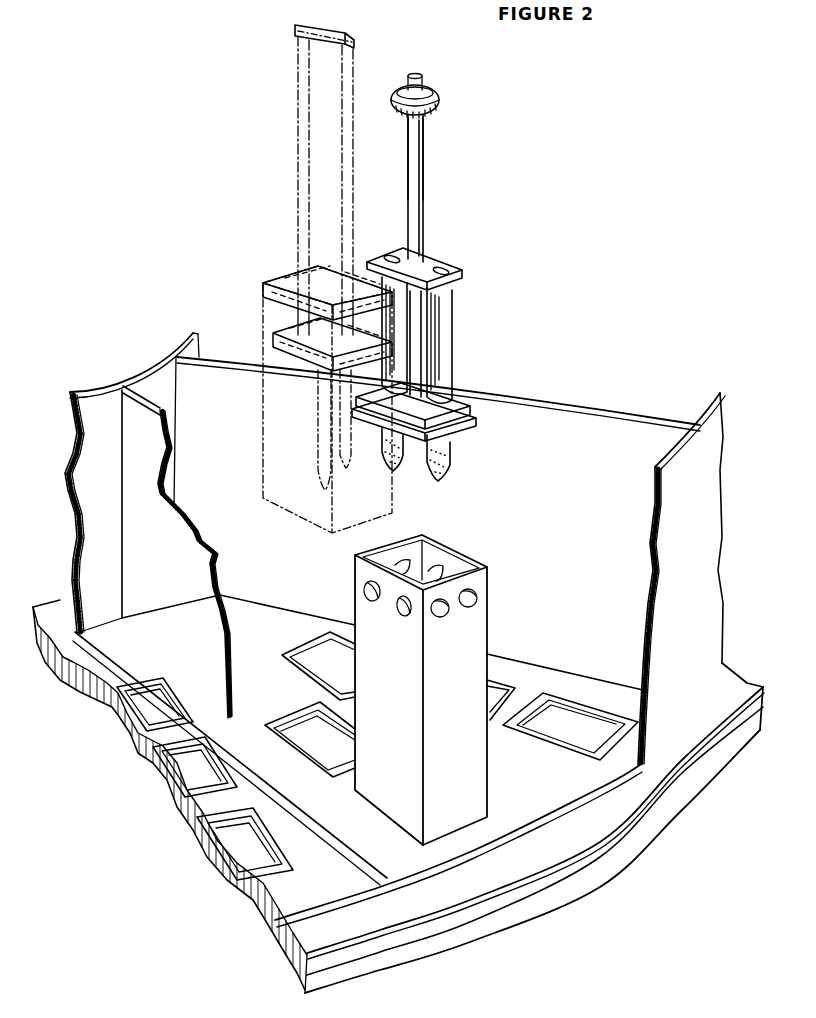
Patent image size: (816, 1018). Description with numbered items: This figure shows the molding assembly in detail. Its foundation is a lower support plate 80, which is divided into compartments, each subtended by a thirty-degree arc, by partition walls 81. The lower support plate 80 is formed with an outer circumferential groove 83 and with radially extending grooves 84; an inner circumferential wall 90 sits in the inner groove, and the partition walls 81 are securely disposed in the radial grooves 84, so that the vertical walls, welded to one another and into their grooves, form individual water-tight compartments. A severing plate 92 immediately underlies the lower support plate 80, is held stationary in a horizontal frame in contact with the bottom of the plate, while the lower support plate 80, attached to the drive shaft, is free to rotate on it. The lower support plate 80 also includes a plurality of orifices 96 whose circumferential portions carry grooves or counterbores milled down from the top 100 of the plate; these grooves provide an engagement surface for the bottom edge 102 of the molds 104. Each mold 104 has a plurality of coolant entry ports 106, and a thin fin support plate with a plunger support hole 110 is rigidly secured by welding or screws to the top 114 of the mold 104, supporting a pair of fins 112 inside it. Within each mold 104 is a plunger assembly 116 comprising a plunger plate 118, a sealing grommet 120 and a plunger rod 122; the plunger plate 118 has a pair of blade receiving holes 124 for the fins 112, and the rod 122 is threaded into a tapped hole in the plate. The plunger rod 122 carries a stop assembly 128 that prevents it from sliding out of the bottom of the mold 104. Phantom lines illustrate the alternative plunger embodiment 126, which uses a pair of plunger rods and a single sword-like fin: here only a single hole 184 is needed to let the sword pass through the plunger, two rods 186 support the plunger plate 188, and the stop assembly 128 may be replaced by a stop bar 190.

The lower support plate 80 is at (597, 855).
The partition walls 81 is at (148, 461).
The outer circumferential groove 83 is at (432, 870).
The radially extending grooves 84 is at (347, 852).
The inner circumferential wall 90 is at (92, 390).
The severing plate 92 is at (493, 928).
The orifices 96 is at (285, 726).
The top of the supporting plate 100 is at (270, 677).
The bottom edge of mold 102 is at (444, 687).
The mold 104 is at (309, 400).
The coolant entry ports 106 is at (480, 598).
The plunger support hole 110 is at (422, 262).
The fins 112 is at (440, 266).
The top of mold 114 is at (453, 550).
The plunger assembly 116 is at (427, 185).
The plunger plate 118 is at (467, 430).
The sealing grommet 120 is at (377, 413).
The plunger rod 122 is at (427, 148).
The blade receiving holes 124 is at (452, 390).
The alternative plunger embodiment 126 is at (317, 410).
The stop assembly 128 is at (447, 95).
The single hole 184 is at (328, 338).
The rods 186 is at (298, 153).
The plunger plate 188 is at (290, 330).
The stop bar 190 is at (318, 28).